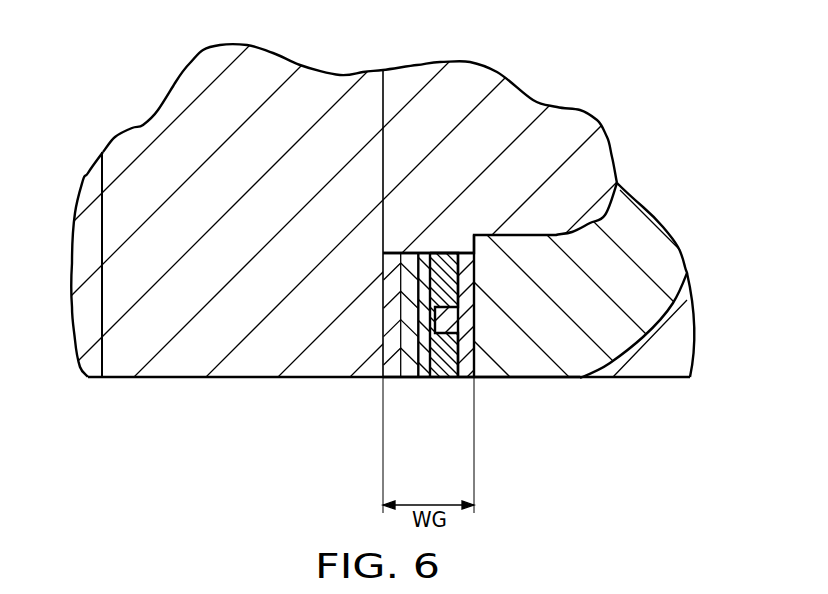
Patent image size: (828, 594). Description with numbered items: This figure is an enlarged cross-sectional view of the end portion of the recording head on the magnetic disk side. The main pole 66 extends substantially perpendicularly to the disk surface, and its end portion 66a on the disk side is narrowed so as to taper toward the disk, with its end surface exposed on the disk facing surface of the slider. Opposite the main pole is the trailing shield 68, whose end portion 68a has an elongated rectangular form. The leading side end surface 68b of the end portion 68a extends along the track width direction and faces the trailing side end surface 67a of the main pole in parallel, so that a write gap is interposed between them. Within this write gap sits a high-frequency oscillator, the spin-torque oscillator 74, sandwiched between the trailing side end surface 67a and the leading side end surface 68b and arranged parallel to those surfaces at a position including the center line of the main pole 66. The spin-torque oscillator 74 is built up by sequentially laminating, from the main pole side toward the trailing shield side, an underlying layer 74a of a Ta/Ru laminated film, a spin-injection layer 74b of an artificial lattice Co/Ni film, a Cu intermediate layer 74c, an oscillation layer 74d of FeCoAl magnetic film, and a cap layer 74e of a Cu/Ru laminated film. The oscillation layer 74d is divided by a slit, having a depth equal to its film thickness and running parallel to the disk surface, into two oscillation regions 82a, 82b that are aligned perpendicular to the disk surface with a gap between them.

The main pole 66 is at (217, 47).
The end portion of the main pole 66a is at (176, 368).
The trailing side end surface 67a is at (388, 237).
The spin-torque oscillator 74 is at (442, 253).
The underlying layer 74a is at (391, 377).
The spin-injection layer 74b is at (407, 377).
The intermediate layer 74c is at (430, 377).
The oscillation layer 74d is at (446, 265).
The cap layer 74e is at (461, 366).
The oscillation region 82a is at (473, 363).
The oscillation region 82b is at (473, 280).
The trailing shield 68 is at (647, 228).
The end portion of the trailing shield 68a is at (567, 363).
The leading side end surface 68b is at (460, 305).